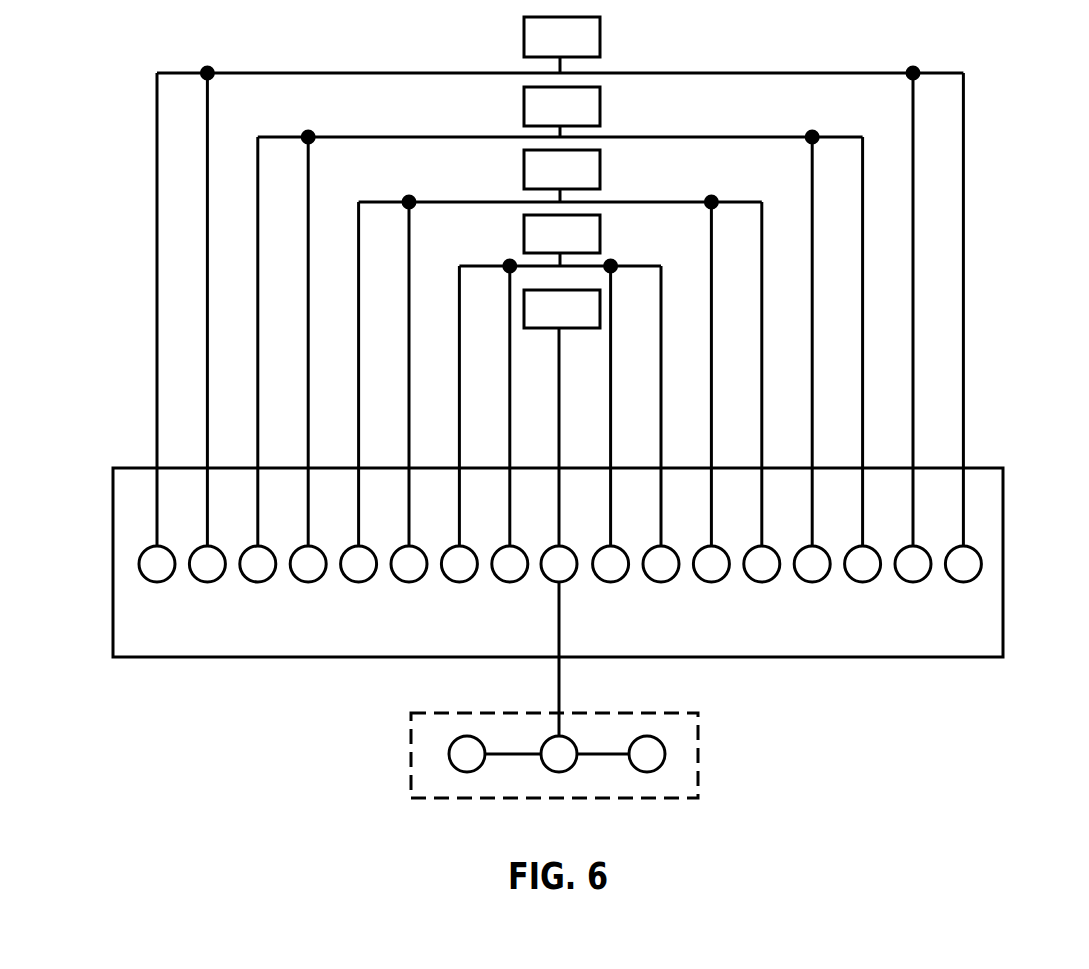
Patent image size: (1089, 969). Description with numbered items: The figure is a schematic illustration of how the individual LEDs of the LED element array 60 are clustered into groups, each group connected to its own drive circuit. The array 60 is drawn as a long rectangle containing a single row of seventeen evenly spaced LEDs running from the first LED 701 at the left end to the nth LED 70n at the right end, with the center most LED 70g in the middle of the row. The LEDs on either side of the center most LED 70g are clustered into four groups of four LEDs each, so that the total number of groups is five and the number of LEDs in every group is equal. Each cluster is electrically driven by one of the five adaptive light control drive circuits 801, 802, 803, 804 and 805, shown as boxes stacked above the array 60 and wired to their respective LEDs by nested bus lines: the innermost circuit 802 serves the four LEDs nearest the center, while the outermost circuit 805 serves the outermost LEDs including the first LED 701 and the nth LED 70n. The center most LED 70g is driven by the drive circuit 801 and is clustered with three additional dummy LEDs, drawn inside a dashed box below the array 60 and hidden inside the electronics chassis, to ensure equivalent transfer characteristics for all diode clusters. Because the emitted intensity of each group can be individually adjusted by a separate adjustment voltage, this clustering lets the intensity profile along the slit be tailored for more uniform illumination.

The LED element array 60 is at (237, 608).
The first LED 701 is at (139, 562).
The nth LED 70n is at (981, 562).
The center most LED 70g is at (570, 575).
The adaptive light control drive circuit 801 is at (562, 418).
The adaptive light control drive circuit 802 is at (560, 380).
The adaptive light control drive circuit 803 is at (560, 348).
The adaptive light control drive circuit 804 is at (560, 316).
The adaptive light control drive circuit 805 is at (560, 281).